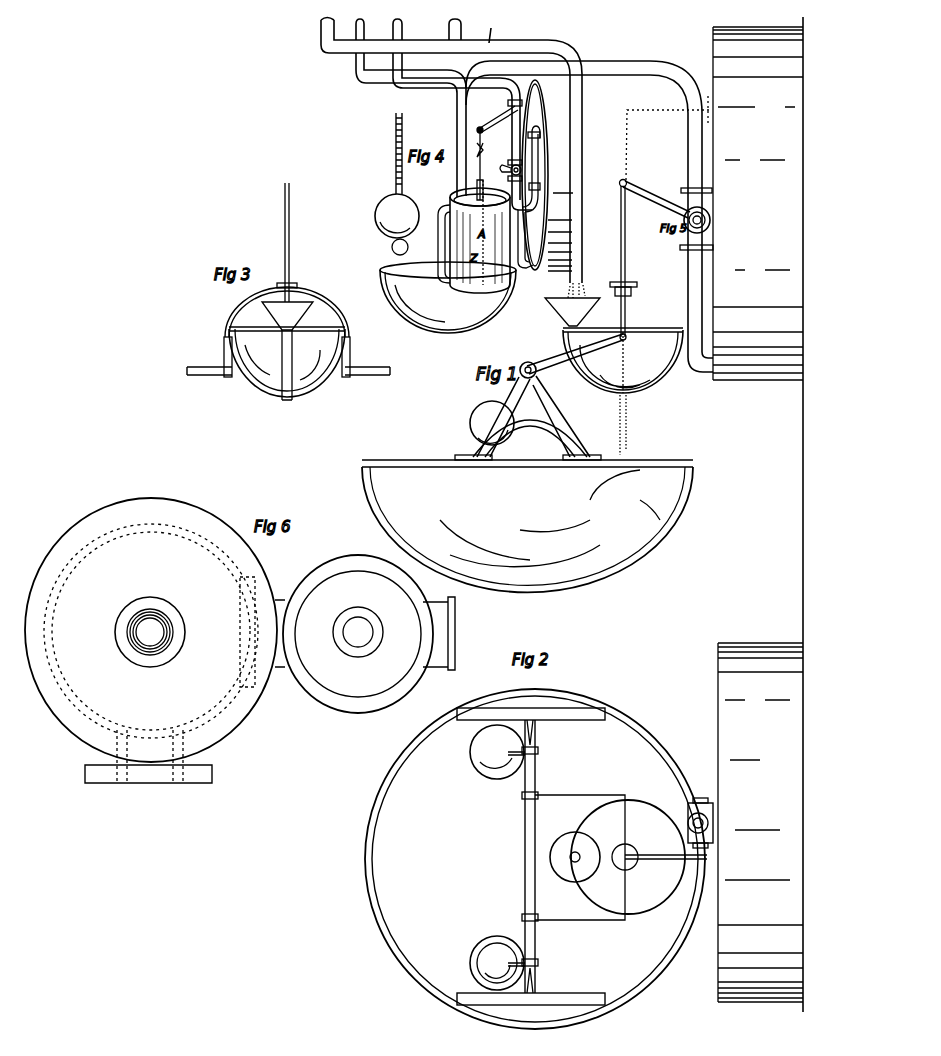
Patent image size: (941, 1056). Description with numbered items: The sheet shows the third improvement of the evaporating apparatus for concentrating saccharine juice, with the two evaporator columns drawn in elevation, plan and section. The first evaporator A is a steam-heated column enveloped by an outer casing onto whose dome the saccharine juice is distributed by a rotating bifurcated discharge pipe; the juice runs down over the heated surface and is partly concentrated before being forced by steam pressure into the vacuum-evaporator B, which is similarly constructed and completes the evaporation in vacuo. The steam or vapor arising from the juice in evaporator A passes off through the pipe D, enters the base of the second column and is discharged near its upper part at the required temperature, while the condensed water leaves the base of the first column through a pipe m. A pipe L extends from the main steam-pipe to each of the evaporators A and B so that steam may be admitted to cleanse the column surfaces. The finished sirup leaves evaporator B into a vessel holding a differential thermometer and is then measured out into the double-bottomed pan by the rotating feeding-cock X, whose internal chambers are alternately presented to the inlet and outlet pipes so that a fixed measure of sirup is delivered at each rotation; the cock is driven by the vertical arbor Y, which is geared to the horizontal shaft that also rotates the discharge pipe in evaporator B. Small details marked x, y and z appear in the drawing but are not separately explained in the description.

In FIG. 1, the first evaporator column (pressure-evaporator) A is at (623, 360).
In FIG. 3, the first evaporator column (pressure-evaporator) A is at (287, 362).
In FIG. 6, the first evaporator column (pressure-evaporator) A is at (151, 630).
In FIG. 2, the first evaporator column (pressure-evaporator) A is at (628, 857).
In FIG. 1, the vacuum-evaporator B is at (492, 423).
In FIG. 2, the vacuum-evaporator B is at (497, 857).
In FIG. 1, the vapor pipe D is at (589, 216).
In FIG. 6, the steam cleansing pipe L is at (150, 632).
In FIG. 6, the rotating feeding-cock X is at (425, 633).
In FIG. 6, the vertical arbor Y is at (358, 632).
In FIG. 1, the condensed-water pipe m is at (669, 138).
In FIG. 1, the vertical rod x is at (623, 260).
In FIG. 1, the valve lever y is at (499, 150).
In FIG. 4, the float bulb z is at (397, 184).